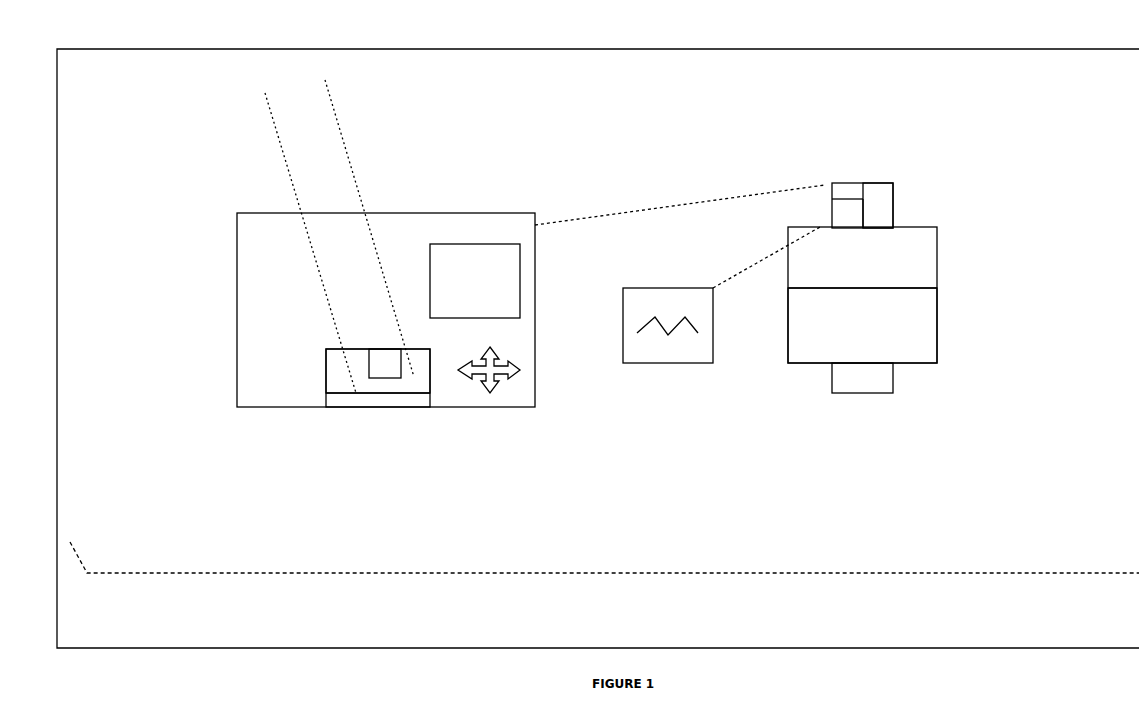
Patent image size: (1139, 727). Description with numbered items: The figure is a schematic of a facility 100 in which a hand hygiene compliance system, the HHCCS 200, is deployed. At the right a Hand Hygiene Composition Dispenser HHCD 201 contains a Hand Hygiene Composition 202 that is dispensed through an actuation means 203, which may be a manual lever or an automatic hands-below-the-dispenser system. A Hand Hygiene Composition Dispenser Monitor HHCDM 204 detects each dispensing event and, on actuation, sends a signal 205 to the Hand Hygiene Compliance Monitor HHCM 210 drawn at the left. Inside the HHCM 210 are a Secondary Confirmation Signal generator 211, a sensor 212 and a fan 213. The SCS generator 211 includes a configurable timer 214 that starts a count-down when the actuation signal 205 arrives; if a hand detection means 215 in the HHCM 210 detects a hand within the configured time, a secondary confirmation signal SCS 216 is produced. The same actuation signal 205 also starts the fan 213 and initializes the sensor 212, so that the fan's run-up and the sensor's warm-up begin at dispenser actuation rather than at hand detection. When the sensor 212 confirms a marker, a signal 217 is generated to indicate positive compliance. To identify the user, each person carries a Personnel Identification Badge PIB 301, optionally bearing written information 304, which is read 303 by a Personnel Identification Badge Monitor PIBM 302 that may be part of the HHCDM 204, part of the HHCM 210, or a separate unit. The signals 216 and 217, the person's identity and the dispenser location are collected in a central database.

The facility 100 is at (523, 44).
The HHCCS 200 is at (539, 574).
The Hand Hygiene Composition Dispenser 201 is at (941, 318).
The Hand Hygiene Composition 202 is at (910, 338).
The actuation means 203 is at (880, 397).
The Hand Hygiene Composition Dispenser Monitor 204 is at (896, 200).
The signal 205 is at (625, 207).
The Hand Hygiene Compliance Monitor 210 is at (262, 212).
The Secondary Confirmation Signal generator 211 is at (338, 363).
The sensor 212 is at (458, 268).
The fan 213 is at (490, 395).
The configurable timer 214 is at (383, 360).
The hand detection means 215 is at (380, 409).
The SCS 216 is at (343, 120).
The signal 217 is at (296, 227).
The Personnel Identification Badge 301 is at (683, 366).
The Personnel Identification Badge Monitor 302 is at (868, 196).
The reading 303 is at (745, 268).
The written information 304 is at (702, 340).